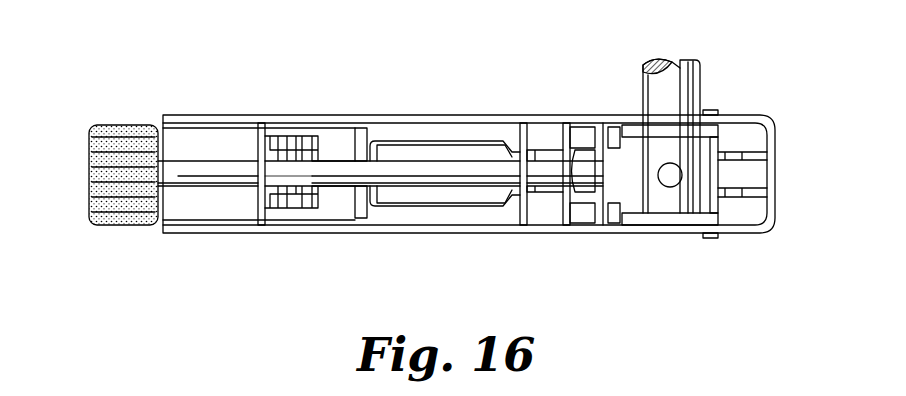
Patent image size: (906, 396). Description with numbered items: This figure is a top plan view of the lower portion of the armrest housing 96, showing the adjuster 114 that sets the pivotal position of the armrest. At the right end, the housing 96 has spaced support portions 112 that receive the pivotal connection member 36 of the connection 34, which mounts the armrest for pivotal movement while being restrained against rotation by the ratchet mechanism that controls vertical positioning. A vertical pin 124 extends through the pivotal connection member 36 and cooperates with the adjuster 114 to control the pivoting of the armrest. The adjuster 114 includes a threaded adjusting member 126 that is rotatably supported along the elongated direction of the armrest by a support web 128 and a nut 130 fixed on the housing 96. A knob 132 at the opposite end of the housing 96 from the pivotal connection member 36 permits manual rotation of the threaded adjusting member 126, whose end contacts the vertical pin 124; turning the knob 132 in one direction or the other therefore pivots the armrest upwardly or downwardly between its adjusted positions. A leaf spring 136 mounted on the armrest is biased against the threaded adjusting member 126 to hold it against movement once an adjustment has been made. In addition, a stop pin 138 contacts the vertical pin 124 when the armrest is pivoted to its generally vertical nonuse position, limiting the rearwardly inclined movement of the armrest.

The connection 34 is at (703, 83).
The pivotal connection member 36 is at (670, 75).
The armrest housing 96 is at (453, 115).
The cross bar 112 is at (677, 130).
The adjuster 114 is at (467, 160).
The vertical pin 124 is at (672, 175).
The threaded adjusting member 126 is at (492, 167).
The support web 128 is at (270, 130).
The nut 130 is at (583, 180).
The knob 132 is at (122, 226).
The leaf spring 136 is at (360, 203).
The stop pin 138 is at (713, 155).